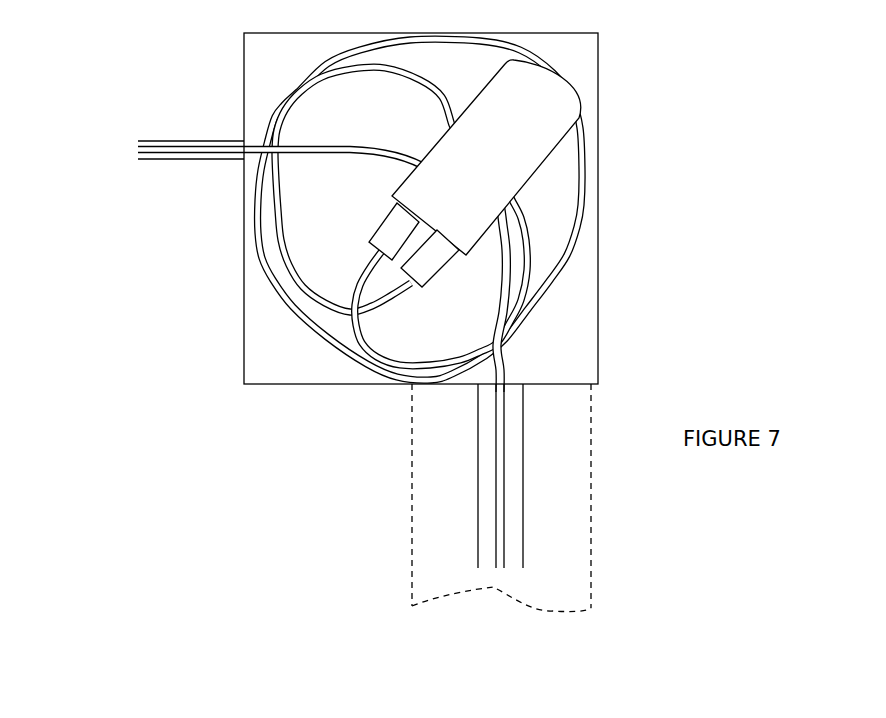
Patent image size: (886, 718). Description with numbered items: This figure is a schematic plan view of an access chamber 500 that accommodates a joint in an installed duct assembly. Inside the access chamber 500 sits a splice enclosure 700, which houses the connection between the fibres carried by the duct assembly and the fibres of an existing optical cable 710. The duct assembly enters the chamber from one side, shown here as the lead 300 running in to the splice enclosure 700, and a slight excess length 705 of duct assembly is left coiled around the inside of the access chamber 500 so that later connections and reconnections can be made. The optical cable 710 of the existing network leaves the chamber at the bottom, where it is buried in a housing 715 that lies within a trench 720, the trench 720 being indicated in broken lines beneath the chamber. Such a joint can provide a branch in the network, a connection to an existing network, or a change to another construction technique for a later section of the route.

The cable 300 is at (152, 140).
The access chamber 500 is at (264, 385).
The splice enclosure 700 is at (567, 82).
The excess length 705 is at (585, 210).
The optical cable 710 is at (478, 395).
The housing 715 is at (478, 467).
The trench 720 is at (410, 580).